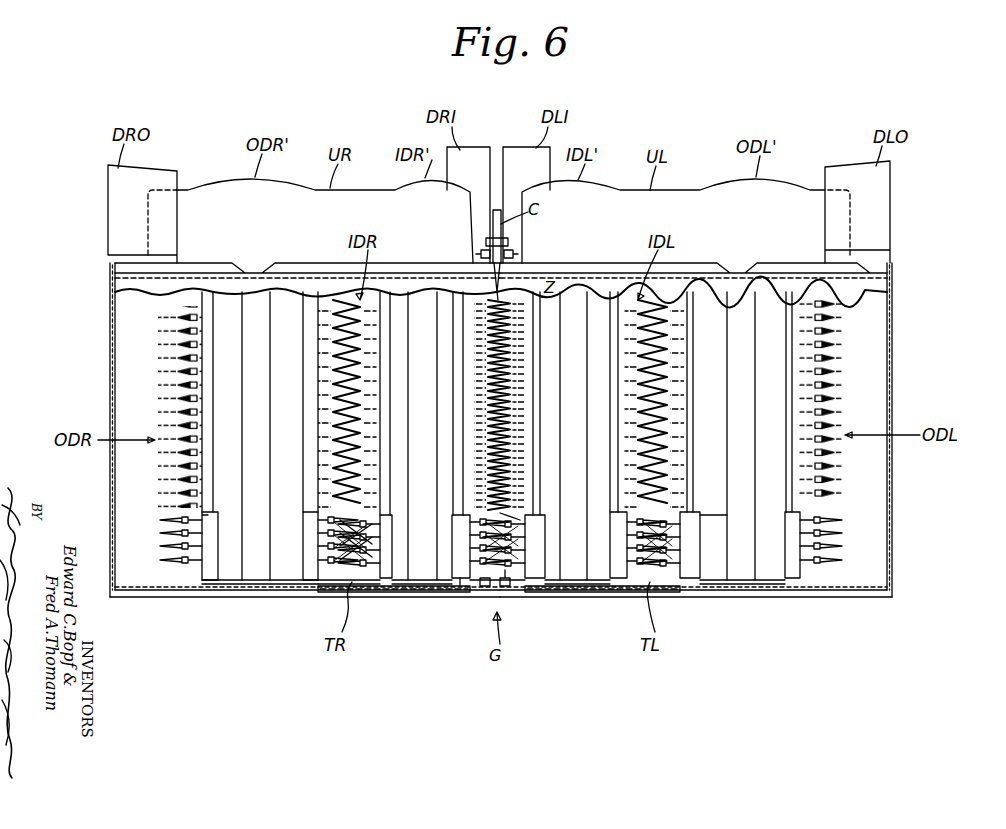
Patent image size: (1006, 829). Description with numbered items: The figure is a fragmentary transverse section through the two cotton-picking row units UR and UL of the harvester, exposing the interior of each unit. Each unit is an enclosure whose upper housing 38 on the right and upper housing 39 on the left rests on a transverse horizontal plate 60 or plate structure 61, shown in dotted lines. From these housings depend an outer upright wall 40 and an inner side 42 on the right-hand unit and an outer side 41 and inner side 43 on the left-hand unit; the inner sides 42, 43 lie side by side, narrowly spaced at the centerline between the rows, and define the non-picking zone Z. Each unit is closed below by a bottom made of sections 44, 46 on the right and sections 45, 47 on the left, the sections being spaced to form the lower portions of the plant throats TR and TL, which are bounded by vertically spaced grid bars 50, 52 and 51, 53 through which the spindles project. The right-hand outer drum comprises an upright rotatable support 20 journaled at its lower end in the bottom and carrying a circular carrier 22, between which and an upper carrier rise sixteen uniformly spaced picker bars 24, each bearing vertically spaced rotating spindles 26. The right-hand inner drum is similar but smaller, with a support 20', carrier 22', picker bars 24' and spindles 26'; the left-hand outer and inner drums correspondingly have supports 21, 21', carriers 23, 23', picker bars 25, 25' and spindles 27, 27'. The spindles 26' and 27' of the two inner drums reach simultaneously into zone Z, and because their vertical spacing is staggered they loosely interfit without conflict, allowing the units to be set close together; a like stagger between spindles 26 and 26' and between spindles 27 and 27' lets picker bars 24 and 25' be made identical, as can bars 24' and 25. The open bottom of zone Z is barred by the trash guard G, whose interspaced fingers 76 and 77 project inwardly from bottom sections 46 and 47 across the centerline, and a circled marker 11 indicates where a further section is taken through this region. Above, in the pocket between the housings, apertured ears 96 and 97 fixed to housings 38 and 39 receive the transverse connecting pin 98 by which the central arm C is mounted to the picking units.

The frame 11 is at (462, 580).
The upright rotatable support 20 is at (228, 545).
The upright rotatable support 20' is at (472, 573).
The upright rotatable support 21 is at (713, 540).
The upright rotatable support 21' is at (559, 461).
The circular carrier 22 is at (260, 603).
The circular carrier 22' is at (422, 605).
The circular carrier 23 is at (742, 601).
The circular carrier 23' is at (577, 608).
The picker bars 24 is at (260, 436).
The picker bars 24' is at (362, 616).
The picker bars 25 is at (746, 508).
The picker bars 25' is at (536, 540).
The spindles 26 is at (162, 540).
The spindles 26' is at (415, 582).
The spindles 27 is at (775, 569).
The spindles 27' is at (574, 553).
The upper housing 38 is at (188, 190).
The upper housing 39 is at (825, 190).
The upright wall 40 is at (110, 378).
The outer side 41 is at (892, 388).
The inner side 42 is at (494, 283).
The inner side 43 is at (500, 283).
The bottom section 44 is at (180, 597).
The bottom section 45 is at (770, 597).
The bottom section 46 is at (428, 592).
The bottom section 47 is at (610, 592).
The grid bars 50 is at (334, 556).
The grid bars 51 is at (676, 528).
The grid bars 52 is at (372, 540).
The grid bars 53 is at (648, 542).
The transverse horizontal plate 60 is at (115, 280).
The transverse horizontal plate structure 61 is at (880, 292).
The guard fingers 76 is at (488, 586).
The guard fingers 77 is at (510, 586).
The apertured ear 96 is at (481, 252).
The apertured ear 97 is at (508, 242).
The connecting pin 98 is at (513, 254).